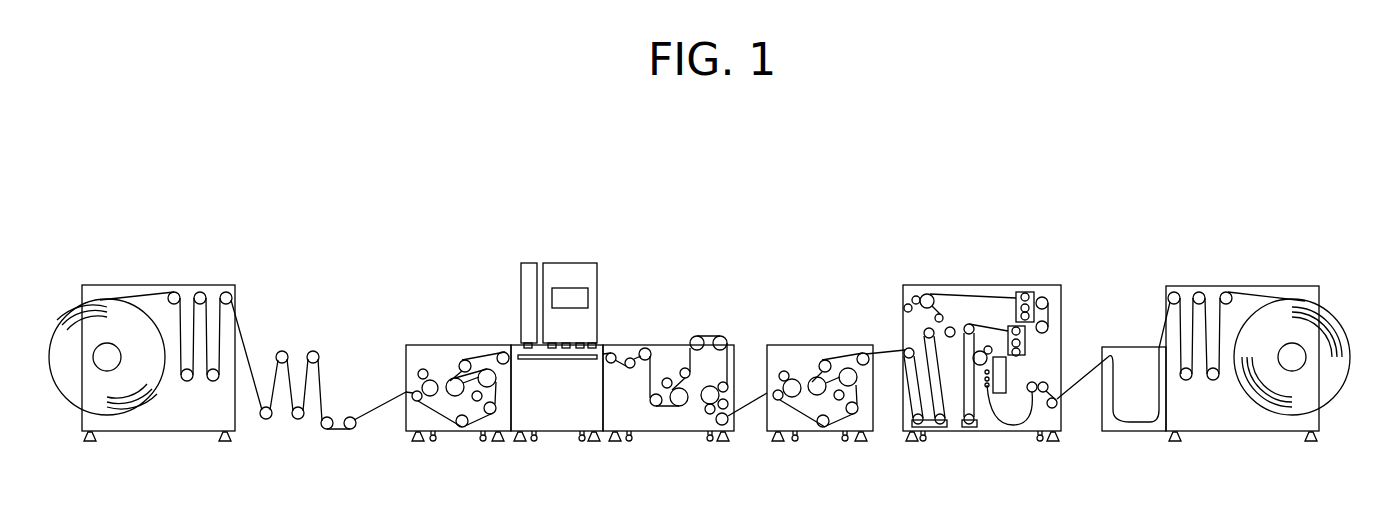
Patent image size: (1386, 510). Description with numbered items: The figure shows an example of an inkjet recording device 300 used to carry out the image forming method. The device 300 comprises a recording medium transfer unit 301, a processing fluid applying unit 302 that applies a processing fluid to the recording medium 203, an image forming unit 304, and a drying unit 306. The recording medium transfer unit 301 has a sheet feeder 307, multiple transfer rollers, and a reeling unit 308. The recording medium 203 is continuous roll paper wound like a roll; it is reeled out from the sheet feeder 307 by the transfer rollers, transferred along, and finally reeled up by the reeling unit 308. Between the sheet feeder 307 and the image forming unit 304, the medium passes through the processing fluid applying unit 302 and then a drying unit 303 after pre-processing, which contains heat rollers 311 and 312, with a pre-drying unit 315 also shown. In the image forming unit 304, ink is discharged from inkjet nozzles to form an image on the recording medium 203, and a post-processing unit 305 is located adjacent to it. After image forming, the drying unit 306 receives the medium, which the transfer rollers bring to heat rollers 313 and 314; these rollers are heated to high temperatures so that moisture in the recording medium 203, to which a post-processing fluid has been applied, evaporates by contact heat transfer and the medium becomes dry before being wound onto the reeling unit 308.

The inkjet recording device 300 is at (717, 229).
The recording medium transfer unit 301 is at (1265, 295).
The processing fluid applying unit 302 is at (940, 285).
The drying unit after pre-processing 303 is at (805, 345).
The image forming unit 304 is at (580, 263).
The post-processing unit 305 is at (529, 263).
The pre-drying unit 315 is at (586, 289).
The recording medium 203 is at (603, 346).
The drying unit 306 is at (453, 345).
The sheet feeder 307 is at (1228, 286).
The reeling unit 308 is at (137, 285).
The heat roller 311 is at (858, 385).
The heat roller 312 is at (822, 397).
The heat roller 313 is at (496, 381).
The heat roller 314 is at (462, 397).